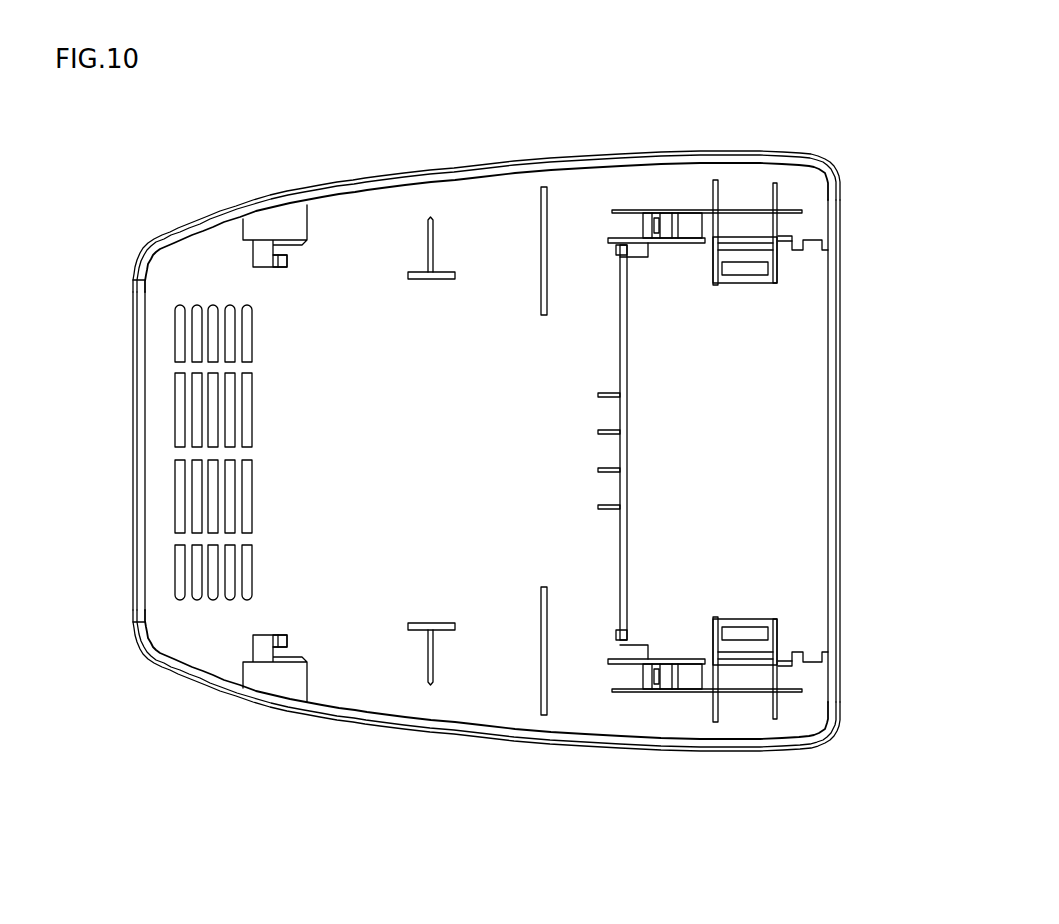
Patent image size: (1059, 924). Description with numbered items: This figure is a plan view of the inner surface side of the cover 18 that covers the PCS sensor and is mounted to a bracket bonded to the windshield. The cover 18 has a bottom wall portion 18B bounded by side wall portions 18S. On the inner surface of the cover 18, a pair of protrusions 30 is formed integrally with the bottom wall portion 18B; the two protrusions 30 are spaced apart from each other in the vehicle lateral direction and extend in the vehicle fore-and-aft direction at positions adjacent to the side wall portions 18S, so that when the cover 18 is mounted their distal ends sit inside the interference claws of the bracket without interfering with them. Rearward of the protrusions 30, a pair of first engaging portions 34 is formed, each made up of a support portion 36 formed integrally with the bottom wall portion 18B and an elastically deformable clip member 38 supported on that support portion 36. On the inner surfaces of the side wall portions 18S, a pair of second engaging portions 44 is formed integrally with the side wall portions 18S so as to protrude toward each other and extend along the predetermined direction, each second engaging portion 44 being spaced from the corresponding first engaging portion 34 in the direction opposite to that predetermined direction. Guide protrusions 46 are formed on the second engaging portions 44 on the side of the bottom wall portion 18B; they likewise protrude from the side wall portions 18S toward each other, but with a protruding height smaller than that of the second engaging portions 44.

The cover 18 is at (782, 129).
The side wall portions 18S is at (403, 172).
The bottom wall portion 18B is at (372, 460).
The protrusions 30 is at (443, 281).
The first engaging portions 34 is at (699, 211).
The support portion 36 is at (628, 246).
The clip member 38 is at (687, 222).
The second engaging portions 44 is at (263, 246).
The guide protrusions 46 is at (296, 253).